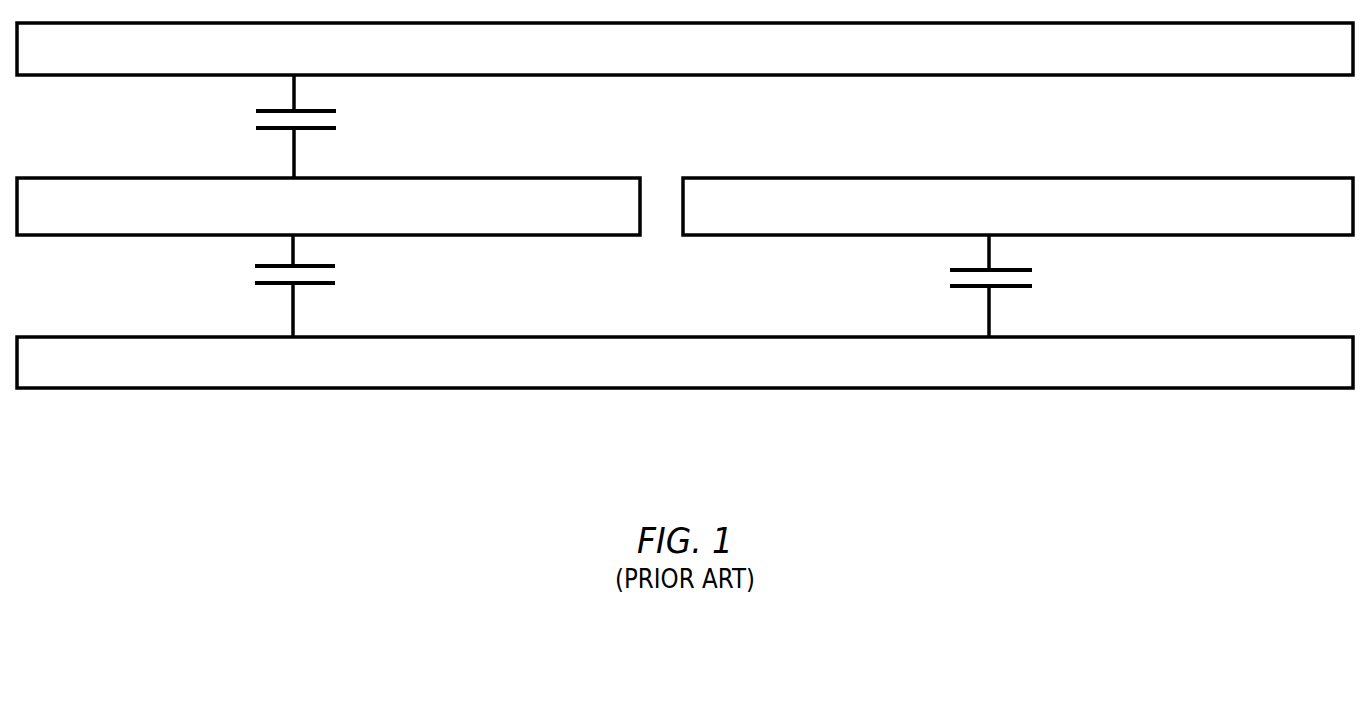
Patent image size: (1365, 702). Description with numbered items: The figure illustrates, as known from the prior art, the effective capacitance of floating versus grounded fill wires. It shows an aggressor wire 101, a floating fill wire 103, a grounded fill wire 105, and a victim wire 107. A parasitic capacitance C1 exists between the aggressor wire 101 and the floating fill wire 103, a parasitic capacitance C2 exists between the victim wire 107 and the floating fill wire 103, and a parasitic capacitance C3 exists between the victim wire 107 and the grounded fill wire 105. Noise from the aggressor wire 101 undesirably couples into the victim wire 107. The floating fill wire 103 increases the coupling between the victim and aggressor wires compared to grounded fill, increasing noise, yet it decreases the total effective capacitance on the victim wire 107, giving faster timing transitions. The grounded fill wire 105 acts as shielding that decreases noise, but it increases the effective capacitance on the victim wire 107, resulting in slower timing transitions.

The aggressor wire 101 is at (790, 62).
The floating fill wire 103 is at (440, 220).
The grounded fill wire 105 is at (1138, 220).
The victim wire 107 is at (768, 378).
The parasitic capacitance C1 is at (321, 126).
The parasitic capacitance C2 is at (326, 286).
The parasitic capacitance C3 is at (1021, 286).